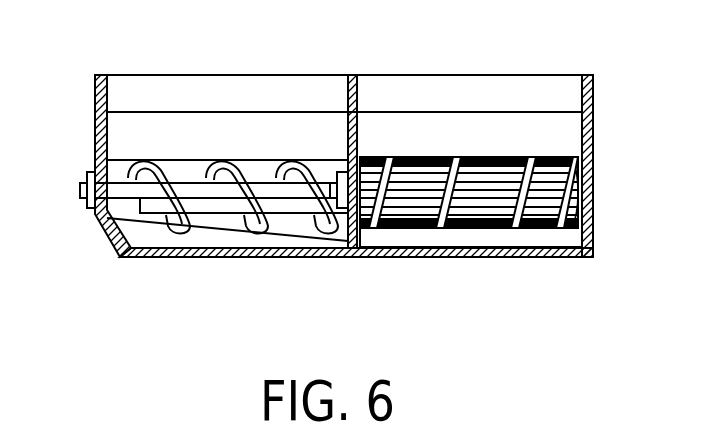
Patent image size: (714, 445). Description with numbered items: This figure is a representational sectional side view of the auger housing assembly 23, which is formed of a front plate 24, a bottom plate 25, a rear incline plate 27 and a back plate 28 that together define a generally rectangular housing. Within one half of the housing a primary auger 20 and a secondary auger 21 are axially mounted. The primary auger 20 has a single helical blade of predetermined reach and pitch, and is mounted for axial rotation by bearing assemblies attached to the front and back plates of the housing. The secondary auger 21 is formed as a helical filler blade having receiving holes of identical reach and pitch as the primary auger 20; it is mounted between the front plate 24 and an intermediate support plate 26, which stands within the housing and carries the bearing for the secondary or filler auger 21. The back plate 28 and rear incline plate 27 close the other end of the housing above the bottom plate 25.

The primary auger 20 is at (237, 165).
The secondary auger 21 is at (455, 158).
The auger housing assembly 23 is at (439, 91).
The front plate 24 is at (594, 134).
The bottom plate 25 is at (450, 256).
The intermediate support plate 26 is at (358, 134).
The rear incline plate 27 is at (117, 243).
The back plate 28 is at (95, 133).